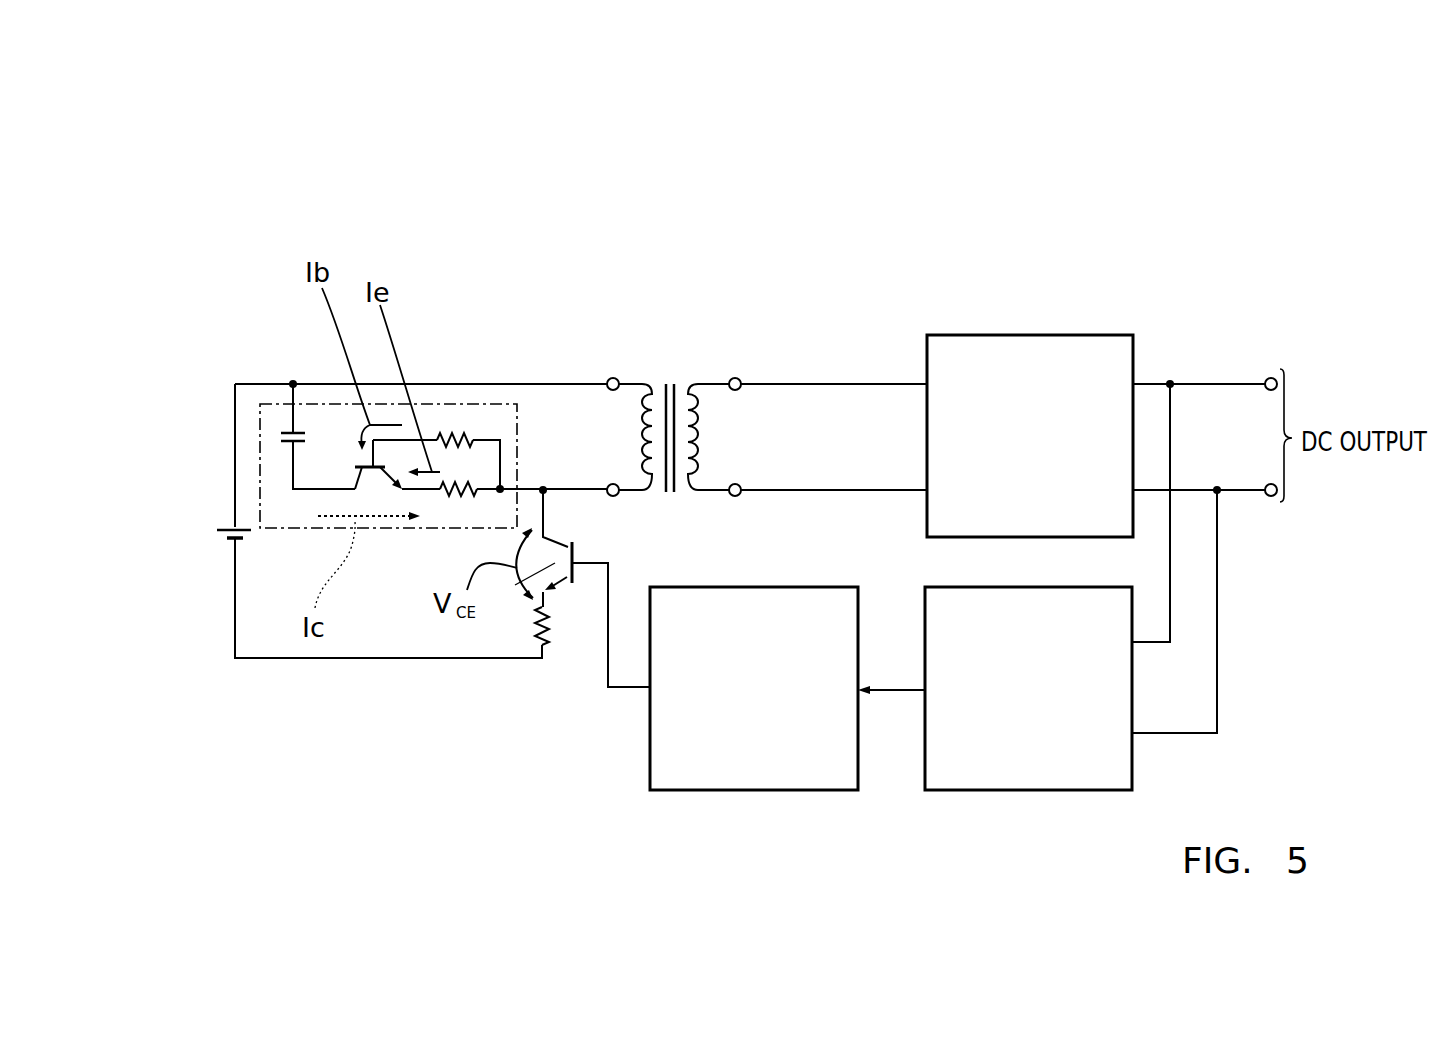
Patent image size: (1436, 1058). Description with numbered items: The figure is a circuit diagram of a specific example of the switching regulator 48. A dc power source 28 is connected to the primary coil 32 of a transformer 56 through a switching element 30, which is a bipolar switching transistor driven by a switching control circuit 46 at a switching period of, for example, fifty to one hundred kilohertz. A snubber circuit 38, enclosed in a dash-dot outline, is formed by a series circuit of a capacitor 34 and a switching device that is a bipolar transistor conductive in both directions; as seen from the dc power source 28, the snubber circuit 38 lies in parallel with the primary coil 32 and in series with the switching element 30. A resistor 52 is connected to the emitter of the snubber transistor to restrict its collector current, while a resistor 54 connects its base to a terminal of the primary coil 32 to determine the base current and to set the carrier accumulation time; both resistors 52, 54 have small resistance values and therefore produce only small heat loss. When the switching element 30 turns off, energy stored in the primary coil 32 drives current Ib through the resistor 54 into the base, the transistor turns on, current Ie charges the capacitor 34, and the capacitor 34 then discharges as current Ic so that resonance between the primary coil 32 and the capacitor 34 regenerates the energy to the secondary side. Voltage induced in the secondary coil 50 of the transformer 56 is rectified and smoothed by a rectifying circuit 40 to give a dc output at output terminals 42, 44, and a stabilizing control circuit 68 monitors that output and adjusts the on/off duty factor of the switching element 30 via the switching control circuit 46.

The dc power source 28 is at (223, 542).
The switching element 30 is at (523, 572).
The primary coil 32 is at (632, 380).
The capacitor 34 is at (282, 432).
The snubber circuit 38 is at (453, 403).
The rectifying circuit 40 is at (1115, 335).
The output terminal 42 is at (1271, 377).
The output terminal 44 is at (1271, 497).
The switching control circuit 46 is at (772, 790).
The switching regulator 48 is at (970, 272).
The secondary coil 50 is at (712, 382).
The resistor 52 is at (460, 495).
The resistor 54 is at (462, 434).
The transformer 56 is at (670, 362).
The stabilizing control circuit 68 is at (1023, 790).